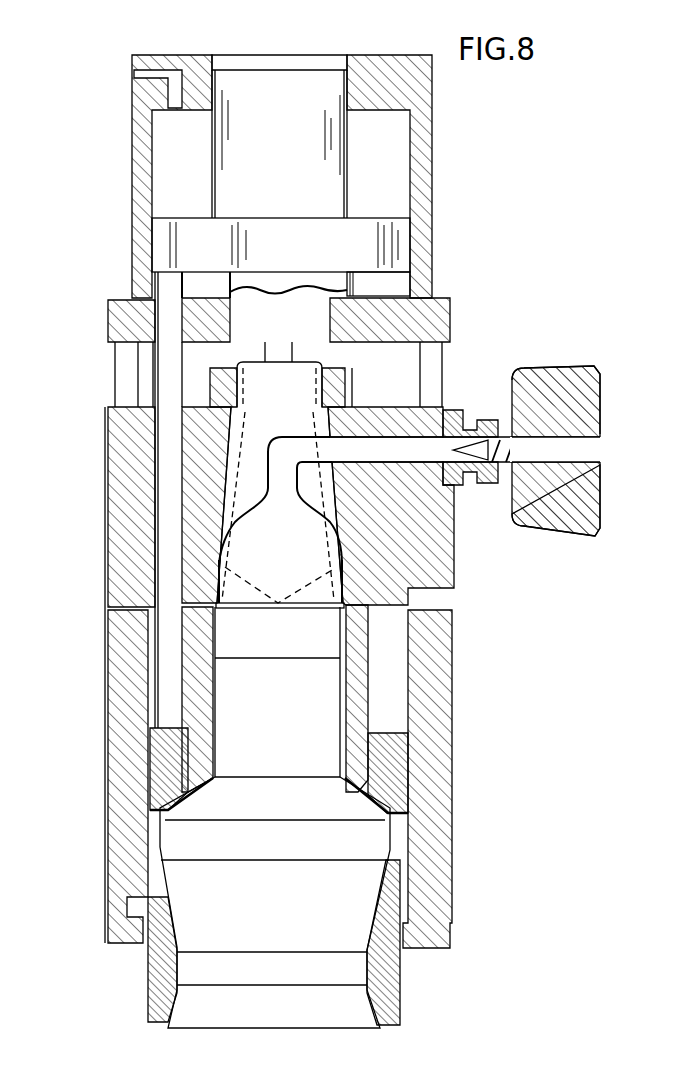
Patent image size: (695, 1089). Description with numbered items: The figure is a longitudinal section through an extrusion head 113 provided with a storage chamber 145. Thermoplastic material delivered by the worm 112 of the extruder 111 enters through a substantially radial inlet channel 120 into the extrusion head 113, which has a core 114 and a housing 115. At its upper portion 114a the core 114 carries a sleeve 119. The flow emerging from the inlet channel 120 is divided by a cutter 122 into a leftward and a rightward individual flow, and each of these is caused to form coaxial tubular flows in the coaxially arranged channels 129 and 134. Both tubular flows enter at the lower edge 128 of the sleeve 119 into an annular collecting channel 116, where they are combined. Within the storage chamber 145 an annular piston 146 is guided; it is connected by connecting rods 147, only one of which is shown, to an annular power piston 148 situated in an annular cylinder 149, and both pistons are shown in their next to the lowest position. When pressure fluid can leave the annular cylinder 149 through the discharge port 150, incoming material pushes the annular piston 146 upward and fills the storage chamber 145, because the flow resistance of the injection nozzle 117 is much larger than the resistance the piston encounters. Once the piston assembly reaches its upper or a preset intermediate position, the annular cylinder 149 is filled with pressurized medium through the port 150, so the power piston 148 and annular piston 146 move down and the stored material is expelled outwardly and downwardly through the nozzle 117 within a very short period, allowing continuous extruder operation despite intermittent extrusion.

The extruder 111 is at (578, 370).
The worm 112 is at (592, 452).
The extrusion head 113 is at (88, 598).
The core 114 is at (248, 722).
The upper portion of the core 114a is at (238, 440).
The housing 115 is at (428, 548).
The annular collecting channel 116 is at (346, 690).
The injection nozzle 117 is at (165, 1006).
The sleeve 119 is at (226, 508).
The inlet channel 120 is at (416, 445).
The cutter 122 is at (323, 452).
The lower edge of the sleeve 128 is at (310, 608).
The coaxial channel 129 is at (228, 575).
The coaxial channel 134 is at (332, 572).
The storage chamber 145 is at (410, 793).
The annular piston 146 is at (165, 780).
The connecting rod 147 is at (165, 688).
The annular power piston 148 is at (182, 242).
The annular cylinder 149 is at (392, 158).
The discharge port 150 is at (153, 78).